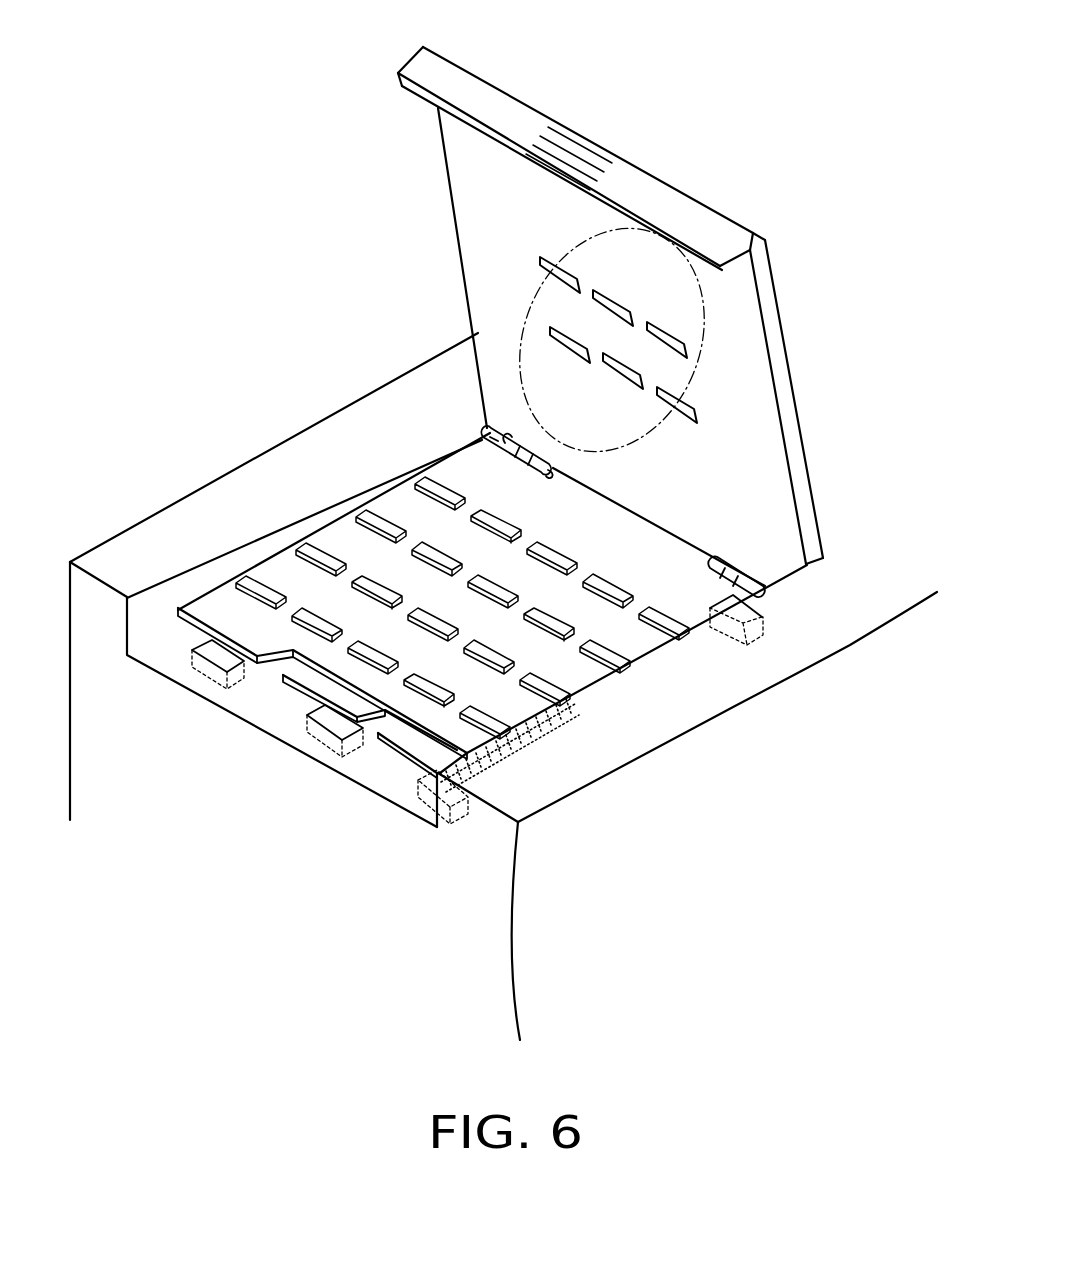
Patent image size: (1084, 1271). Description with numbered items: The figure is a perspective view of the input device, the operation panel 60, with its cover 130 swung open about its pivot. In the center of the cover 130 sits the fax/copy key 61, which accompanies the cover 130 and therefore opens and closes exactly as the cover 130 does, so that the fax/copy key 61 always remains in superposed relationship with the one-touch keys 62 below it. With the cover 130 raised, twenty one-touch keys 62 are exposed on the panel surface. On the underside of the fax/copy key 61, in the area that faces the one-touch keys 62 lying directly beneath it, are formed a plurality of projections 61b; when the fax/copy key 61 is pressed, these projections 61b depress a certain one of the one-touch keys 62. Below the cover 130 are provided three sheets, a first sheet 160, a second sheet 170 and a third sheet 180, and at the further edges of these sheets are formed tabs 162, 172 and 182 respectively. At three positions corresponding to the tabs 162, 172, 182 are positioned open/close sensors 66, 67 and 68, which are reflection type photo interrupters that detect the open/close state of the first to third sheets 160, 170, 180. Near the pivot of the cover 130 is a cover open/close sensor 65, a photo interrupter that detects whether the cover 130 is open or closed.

The operation panel 60 is at (270, 412).
The cover 130 is at (656, 197).
The fax/copy key 61 is at (675, 321).
The projections 61b is at (634, 378).
The first sheet 160 is at (203, 615).
The tab of first sheet 162 is at (275, 653).
The second sheet 170 is at (307, 675).
The tab of second sheet 172 is at (373, 709).
The third sheet 180 is at (387, 713).
The tab of third sheet 182 is at (422, 738).
The first sheet open/close sensor 66 is at (210, 680).
The second sheet open/close sensor 67 is at (317, 742).
The third sheet open/close sensor 68 is at (472, 810).
The one-touch keys 62 is at (566, 698).
The cover open/close sensor 65 is at (766, 630).